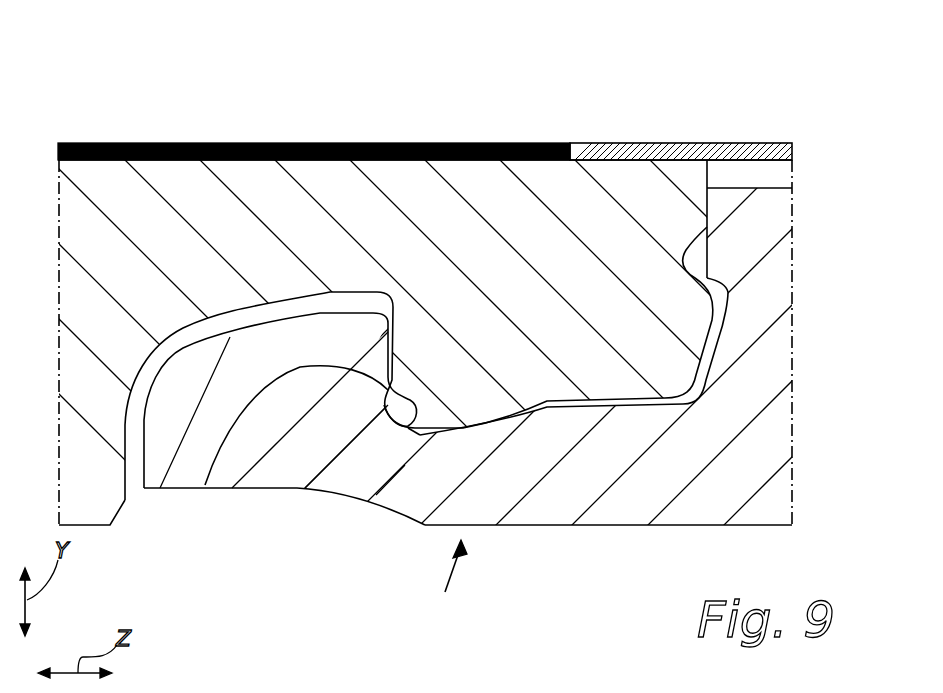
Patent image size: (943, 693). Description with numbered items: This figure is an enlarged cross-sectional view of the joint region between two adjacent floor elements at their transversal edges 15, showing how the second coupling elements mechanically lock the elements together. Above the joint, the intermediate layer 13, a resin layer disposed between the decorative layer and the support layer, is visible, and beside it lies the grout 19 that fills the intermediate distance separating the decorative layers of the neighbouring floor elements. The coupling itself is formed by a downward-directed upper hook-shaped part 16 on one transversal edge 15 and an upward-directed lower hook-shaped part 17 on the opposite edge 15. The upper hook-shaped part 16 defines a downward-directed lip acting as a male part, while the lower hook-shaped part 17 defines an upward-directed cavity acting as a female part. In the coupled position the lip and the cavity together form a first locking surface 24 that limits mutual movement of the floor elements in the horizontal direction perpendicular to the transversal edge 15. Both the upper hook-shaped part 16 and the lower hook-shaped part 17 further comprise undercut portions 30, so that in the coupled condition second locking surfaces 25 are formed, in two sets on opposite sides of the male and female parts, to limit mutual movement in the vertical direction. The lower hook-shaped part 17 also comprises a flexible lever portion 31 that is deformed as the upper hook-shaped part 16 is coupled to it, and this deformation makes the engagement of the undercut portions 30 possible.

The intermediate layer 13 is at (283, 143).
The transversal edge 15 is at (447, 578).
The upper hook-shaped part 16 is at (545, 258).
The lower hook-shaped part 17 is at (507, 478).
The grout 19 is at (590, 143).
The first locking surface 24 is at (707, 258).
The second locking surface 25 is at (747, 252).
The undercut portion 30 is at (690, 238).
The flexible lever portion 31 is at (188, 478).